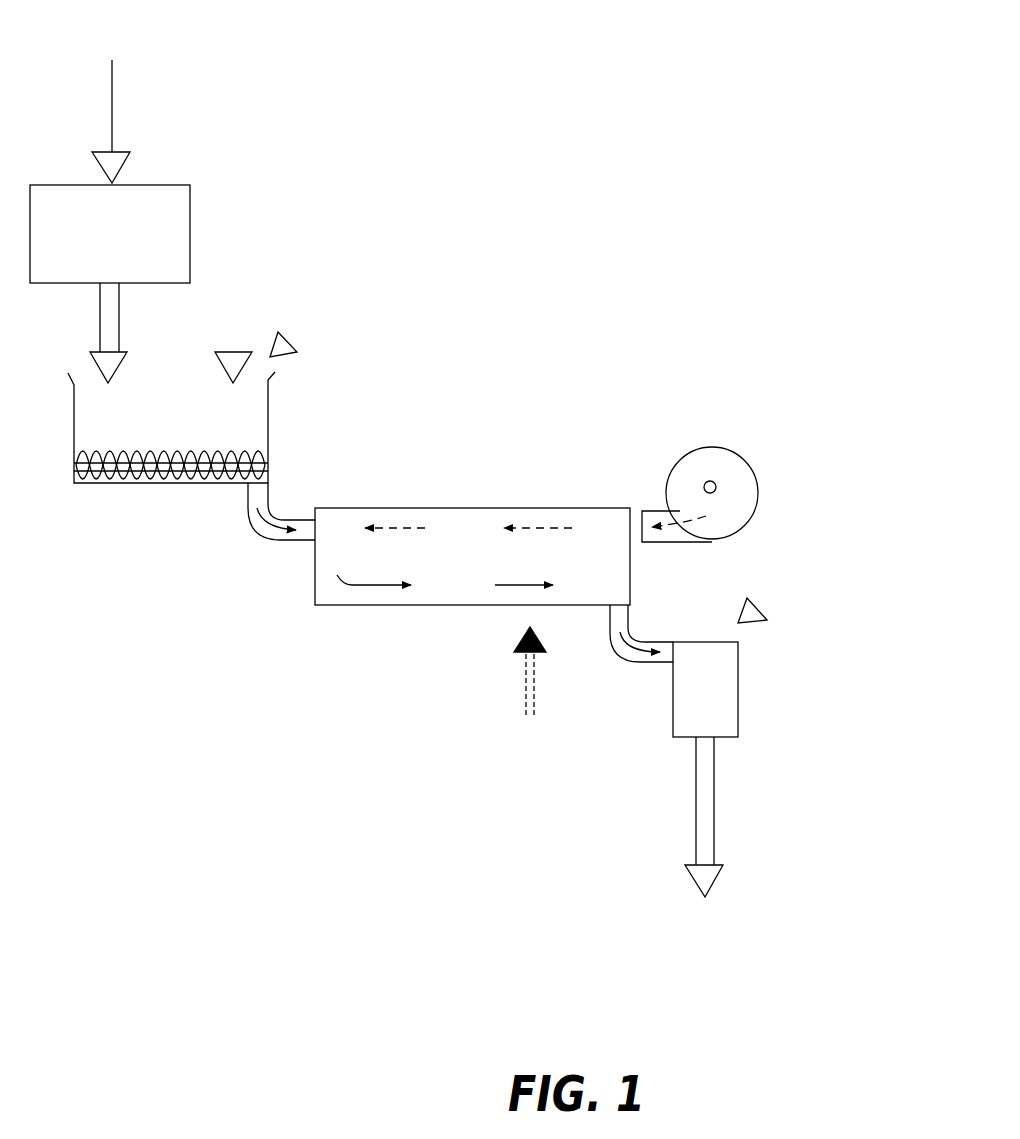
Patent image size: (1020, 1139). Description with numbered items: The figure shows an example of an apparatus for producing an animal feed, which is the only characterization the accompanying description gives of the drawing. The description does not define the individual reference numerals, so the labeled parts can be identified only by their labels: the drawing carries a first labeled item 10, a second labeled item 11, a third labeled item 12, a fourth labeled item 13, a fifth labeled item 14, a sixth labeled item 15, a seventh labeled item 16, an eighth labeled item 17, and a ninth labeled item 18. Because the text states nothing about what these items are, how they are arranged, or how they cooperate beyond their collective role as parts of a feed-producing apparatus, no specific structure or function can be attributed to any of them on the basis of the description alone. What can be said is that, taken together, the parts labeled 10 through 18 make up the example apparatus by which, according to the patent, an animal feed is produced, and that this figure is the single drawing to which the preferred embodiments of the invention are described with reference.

The feed material input 10 is at (112, 104).
The feed hopper / pretreatment unit 11 is at (194, 195).
The additive input 12 is at (233, 352).
The screw mixer / conveyor 13 is at (128, 485).
The reaction chamber / dryer 14 is at (351, 606).
The heat input 15 is at (524, 692).
The blower / fan 16 is at (750, 464).
The collector / separator 17 is at (742, 690).
The product output 18 is at (704, 836).